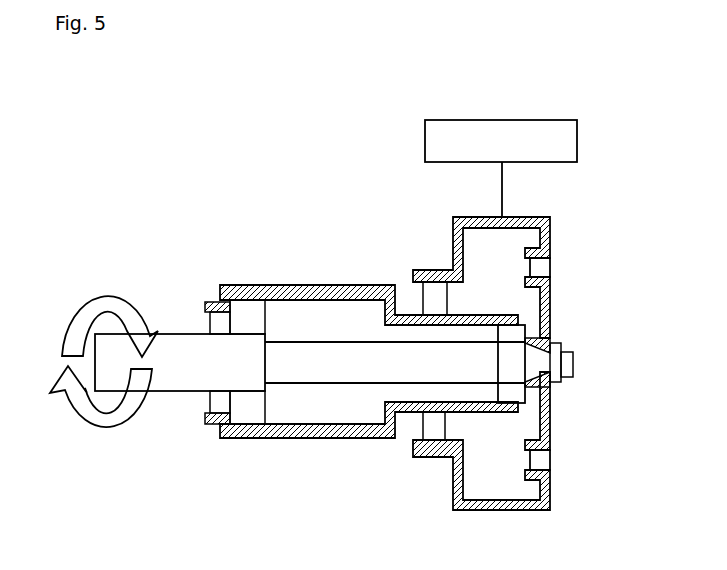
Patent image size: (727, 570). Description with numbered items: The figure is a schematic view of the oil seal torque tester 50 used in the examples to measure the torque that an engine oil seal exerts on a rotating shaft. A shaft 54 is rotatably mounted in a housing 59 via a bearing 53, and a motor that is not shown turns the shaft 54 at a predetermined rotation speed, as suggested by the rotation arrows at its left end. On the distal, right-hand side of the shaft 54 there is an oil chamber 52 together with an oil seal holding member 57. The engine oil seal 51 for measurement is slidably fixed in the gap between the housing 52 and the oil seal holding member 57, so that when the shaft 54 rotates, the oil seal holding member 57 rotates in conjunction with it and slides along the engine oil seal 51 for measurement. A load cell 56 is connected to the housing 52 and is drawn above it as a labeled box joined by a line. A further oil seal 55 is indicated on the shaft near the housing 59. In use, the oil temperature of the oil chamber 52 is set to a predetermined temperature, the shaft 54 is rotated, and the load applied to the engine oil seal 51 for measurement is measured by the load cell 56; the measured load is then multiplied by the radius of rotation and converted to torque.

The oil seal torque tester 50 is at (627, 143).
The engine oil seal for measurement 51 is at (544, 267).
The oil chamber 52 is at (549, 494).
The bearing 53 is at (247, 410).
The shaft 54 is at (298, 355).
The oil seal 55 is at (221, 324).
The load cell 56 is at (517, 119).
The oil seal holding member 57 is at (549, 415).
The housing 59 is at (245, 437).